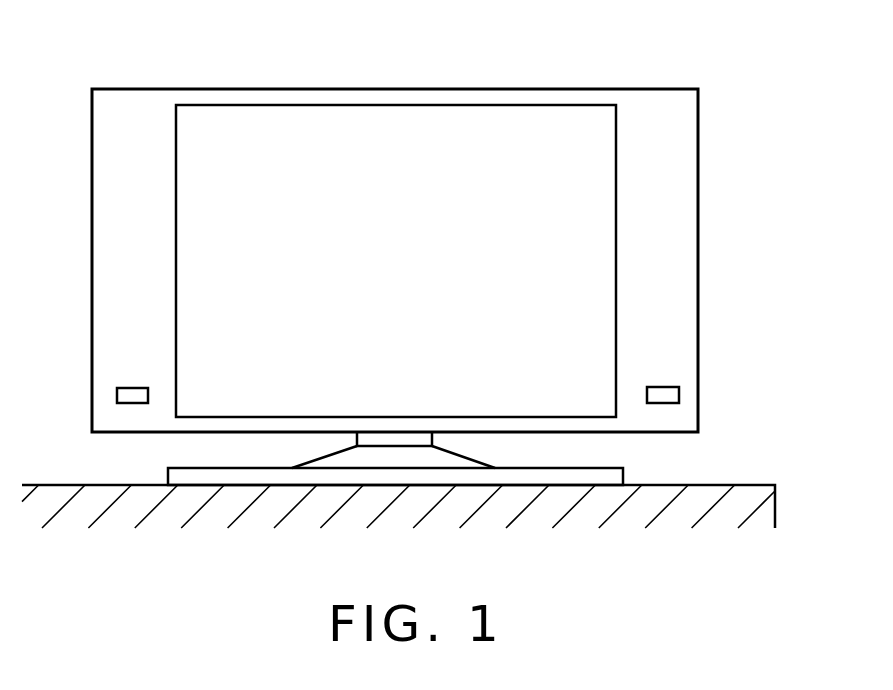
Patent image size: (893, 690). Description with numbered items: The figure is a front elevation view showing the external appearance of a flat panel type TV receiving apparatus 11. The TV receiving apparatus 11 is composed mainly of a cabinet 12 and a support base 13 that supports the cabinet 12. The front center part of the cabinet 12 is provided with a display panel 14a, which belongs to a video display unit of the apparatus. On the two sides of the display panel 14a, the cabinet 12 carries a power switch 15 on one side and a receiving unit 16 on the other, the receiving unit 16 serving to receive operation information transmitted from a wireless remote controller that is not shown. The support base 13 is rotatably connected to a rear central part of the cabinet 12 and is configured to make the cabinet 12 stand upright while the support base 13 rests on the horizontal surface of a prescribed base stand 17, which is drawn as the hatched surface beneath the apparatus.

The TV receiving apparatus 11 is at (413, 65).
The cabinet 12 is at (650, 87).
The support base 13 is at (597, 468).
The display panel 14a is at (540, 104).
The power switch 15 is at (117, 392).
The receiving unit 16 is at (679, 393).
The base stand 17 is at (745, 485).